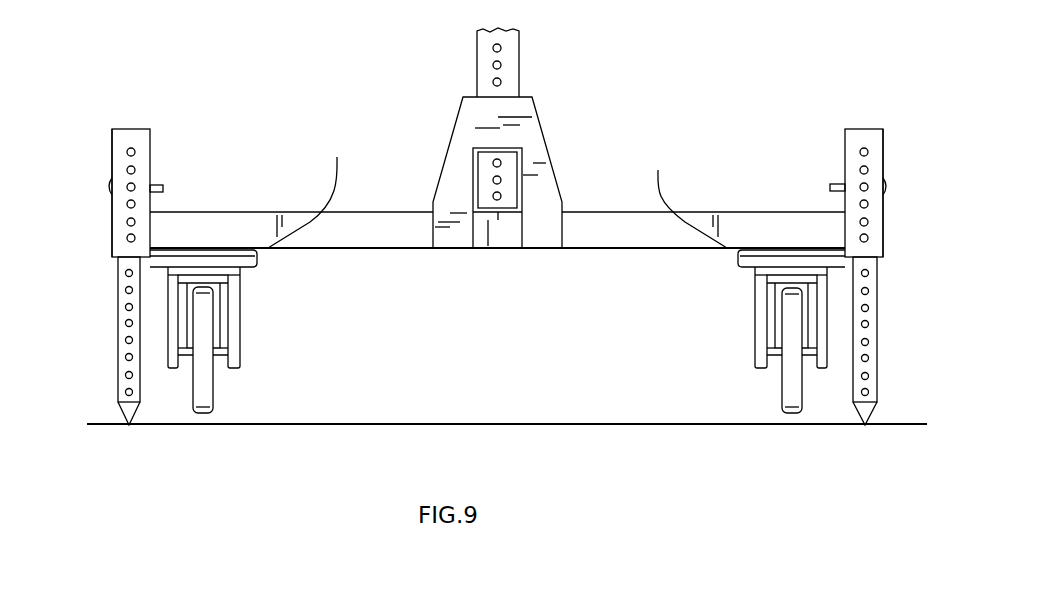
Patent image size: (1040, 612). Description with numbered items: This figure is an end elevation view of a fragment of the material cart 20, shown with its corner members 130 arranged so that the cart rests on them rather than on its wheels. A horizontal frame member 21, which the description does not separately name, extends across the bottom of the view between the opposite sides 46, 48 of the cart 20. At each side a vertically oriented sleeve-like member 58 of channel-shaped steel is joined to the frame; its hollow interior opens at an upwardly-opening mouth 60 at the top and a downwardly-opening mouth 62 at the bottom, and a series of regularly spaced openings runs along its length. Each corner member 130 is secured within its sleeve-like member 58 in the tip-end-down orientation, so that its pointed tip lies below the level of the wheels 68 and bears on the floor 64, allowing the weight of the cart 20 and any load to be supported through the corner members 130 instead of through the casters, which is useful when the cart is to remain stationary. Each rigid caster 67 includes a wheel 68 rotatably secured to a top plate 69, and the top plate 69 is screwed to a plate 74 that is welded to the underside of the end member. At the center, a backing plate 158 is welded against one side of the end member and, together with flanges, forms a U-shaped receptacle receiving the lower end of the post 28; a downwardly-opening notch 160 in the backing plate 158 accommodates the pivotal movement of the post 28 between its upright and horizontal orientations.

The material cart 20 is at (949, 121).
The cross beam 21 is at (377, 250).
The post 28 is at (520, 51).
The side of the cart 46 is at (112, 220).
The side of the cart 48 is at (884, 220).
The sleeve-like member 58 is at (112, 163).
The upwardly-opening mouth 60 is at (132, 130).
The downwardly-opening mouth 62 is at (115, 262).
The floor 64 is at (697, 424).
The rigid caster 67 is at (240, 323).
The wheel 68 is at (203, 395).
The top plate 69 is at (258, 268).
The plate 74 is at (497, 189).
The corner member 130 is at (118, 343).
The backing plate 158 is at (500, 112).
The downwardly-opening notch 160 is at (473, 220).